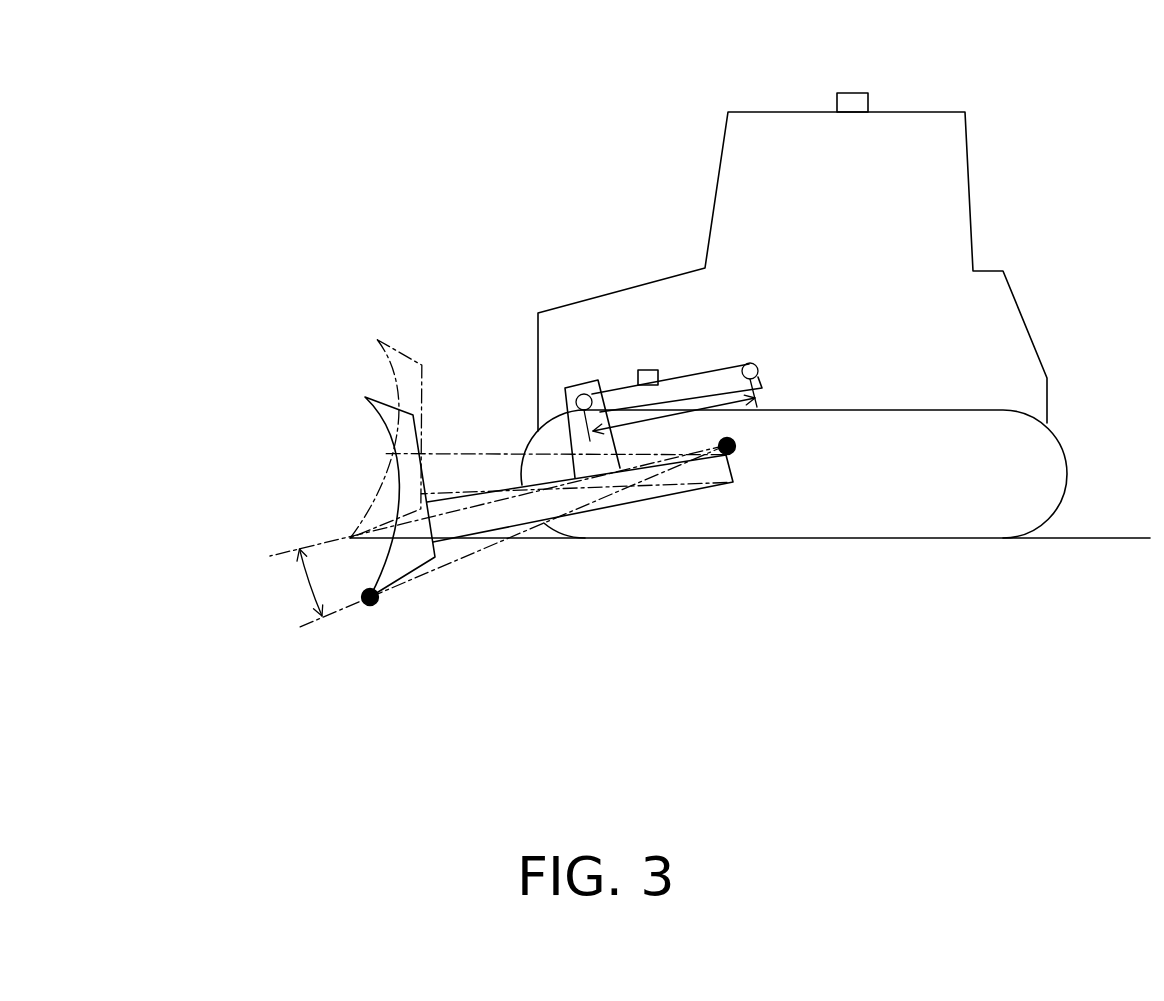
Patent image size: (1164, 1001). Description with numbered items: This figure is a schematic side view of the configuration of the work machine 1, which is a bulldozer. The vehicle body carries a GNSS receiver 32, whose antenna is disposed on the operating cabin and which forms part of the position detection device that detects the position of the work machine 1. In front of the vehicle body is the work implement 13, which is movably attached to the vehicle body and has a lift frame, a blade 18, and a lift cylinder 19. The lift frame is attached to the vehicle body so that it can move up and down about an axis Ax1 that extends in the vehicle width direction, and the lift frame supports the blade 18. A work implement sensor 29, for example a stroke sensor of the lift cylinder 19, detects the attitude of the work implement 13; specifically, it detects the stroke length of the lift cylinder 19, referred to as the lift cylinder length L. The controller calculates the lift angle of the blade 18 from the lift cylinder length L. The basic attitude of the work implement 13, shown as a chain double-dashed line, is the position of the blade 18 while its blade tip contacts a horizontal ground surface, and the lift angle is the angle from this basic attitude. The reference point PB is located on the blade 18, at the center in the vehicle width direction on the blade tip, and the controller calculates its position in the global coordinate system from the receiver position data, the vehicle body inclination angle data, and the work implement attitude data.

The work machine 1 is at (358, 135).
The work implement 13 is at (450, 378).
The blade 18 is at (397, 462).
The lift cylinder 19 is at (682, 363).
The work implement sensor 29 is at (644, 369).
The GNSS receiver 32 is at (851, 93).
The axis Ax1 is at (737, 450).
The reference point PB is at (374, 611).
The lift cylinder length L is at (680, 412).